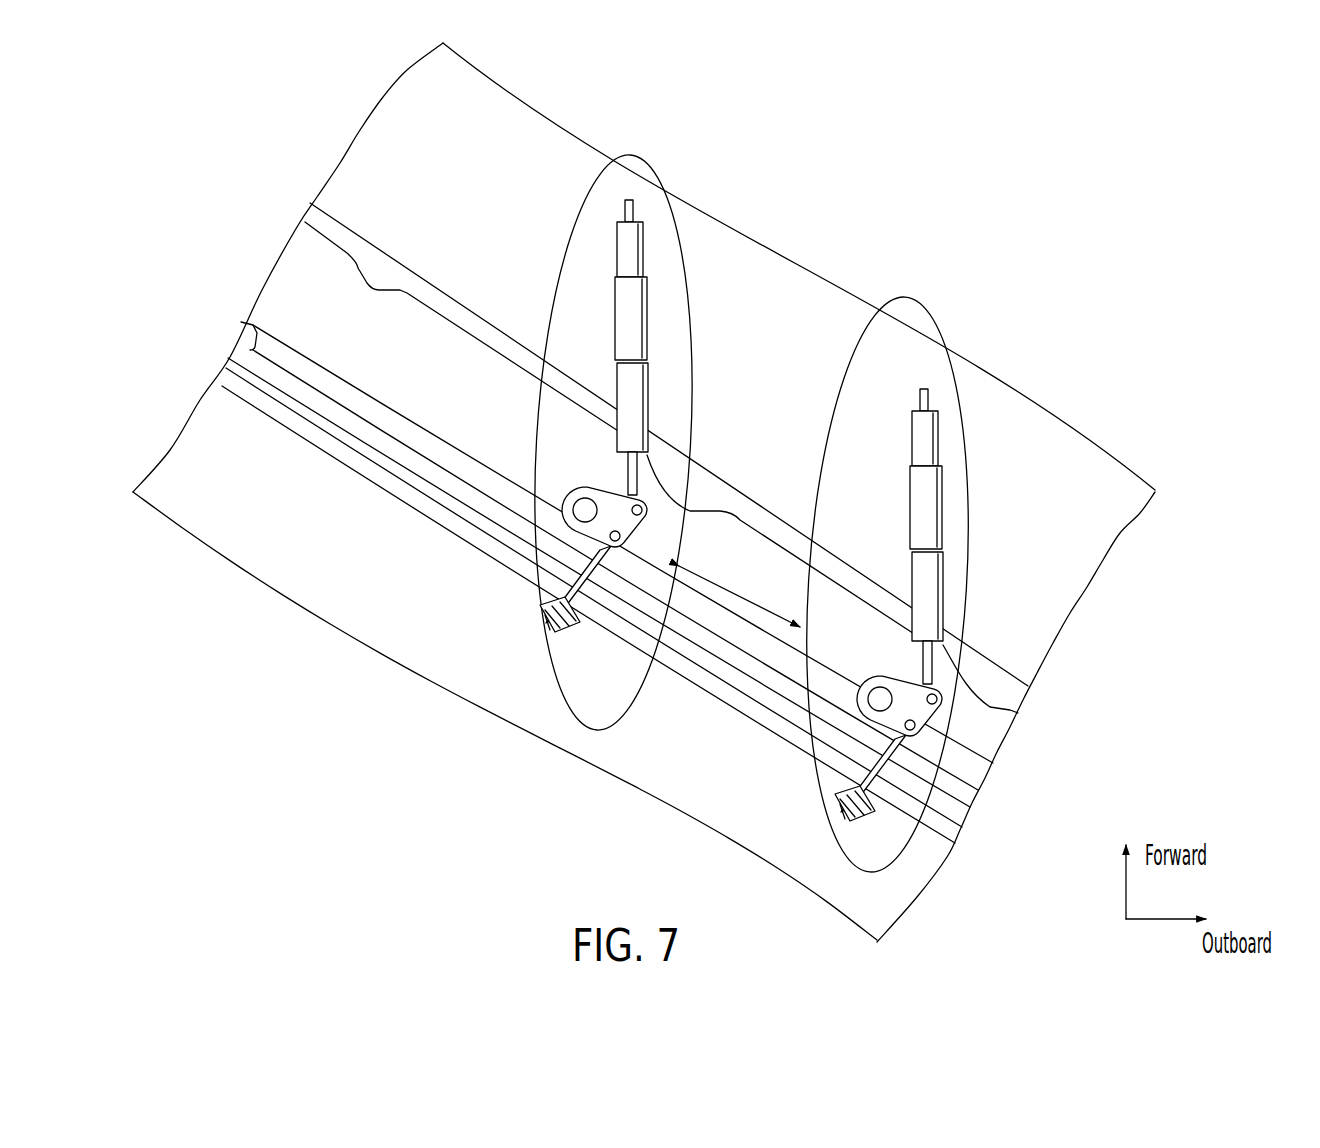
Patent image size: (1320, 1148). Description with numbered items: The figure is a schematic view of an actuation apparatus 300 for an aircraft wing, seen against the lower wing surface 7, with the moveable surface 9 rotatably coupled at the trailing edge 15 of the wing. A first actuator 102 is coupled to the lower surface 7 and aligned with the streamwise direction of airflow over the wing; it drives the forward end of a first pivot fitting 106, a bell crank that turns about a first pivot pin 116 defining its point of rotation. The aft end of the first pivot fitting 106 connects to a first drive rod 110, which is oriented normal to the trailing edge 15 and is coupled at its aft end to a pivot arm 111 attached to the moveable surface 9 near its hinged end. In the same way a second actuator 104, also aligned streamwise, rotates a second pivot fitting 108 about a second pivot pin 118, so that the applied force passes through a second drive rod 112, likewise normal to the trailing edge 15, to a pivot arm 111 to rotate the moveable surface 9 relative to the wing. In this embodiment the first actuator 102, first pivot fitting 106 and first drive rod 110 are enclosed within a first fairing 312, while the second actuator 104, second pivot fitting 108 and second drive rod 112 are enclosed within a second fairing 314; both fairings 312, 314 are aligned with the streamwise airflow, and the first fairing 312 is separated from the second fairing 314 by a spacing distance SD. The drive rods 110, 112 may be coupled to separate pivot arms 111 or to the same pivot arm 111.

The lower wing surface 7 is at (1003, 426).
The moveable surface 9 is at (195, 453).
The trailing edge 15 is at (226, 357).
The first actuator 102 is at (625, 298).
The second actuator 104 is at (930, 517).
The first pivot fitting 106 is at (531, 525).
The second pivot fitting 108 is at (913, 746).
The first drive rod 110 is at (600, 700).
The pivot arm 111 is at (540, 627).
The second drive rod 112 is at (947, 858).
The first pivot pin 116 is at (574, 516).
The second pivot pin 118 is at (868, 705).
The actuation apparatus 300 is at (752, 537).
The first fairing 312 is at (633, 151).
The second fairing 314 is at (919, 297).
The spacing distance SD is at (740, 598).